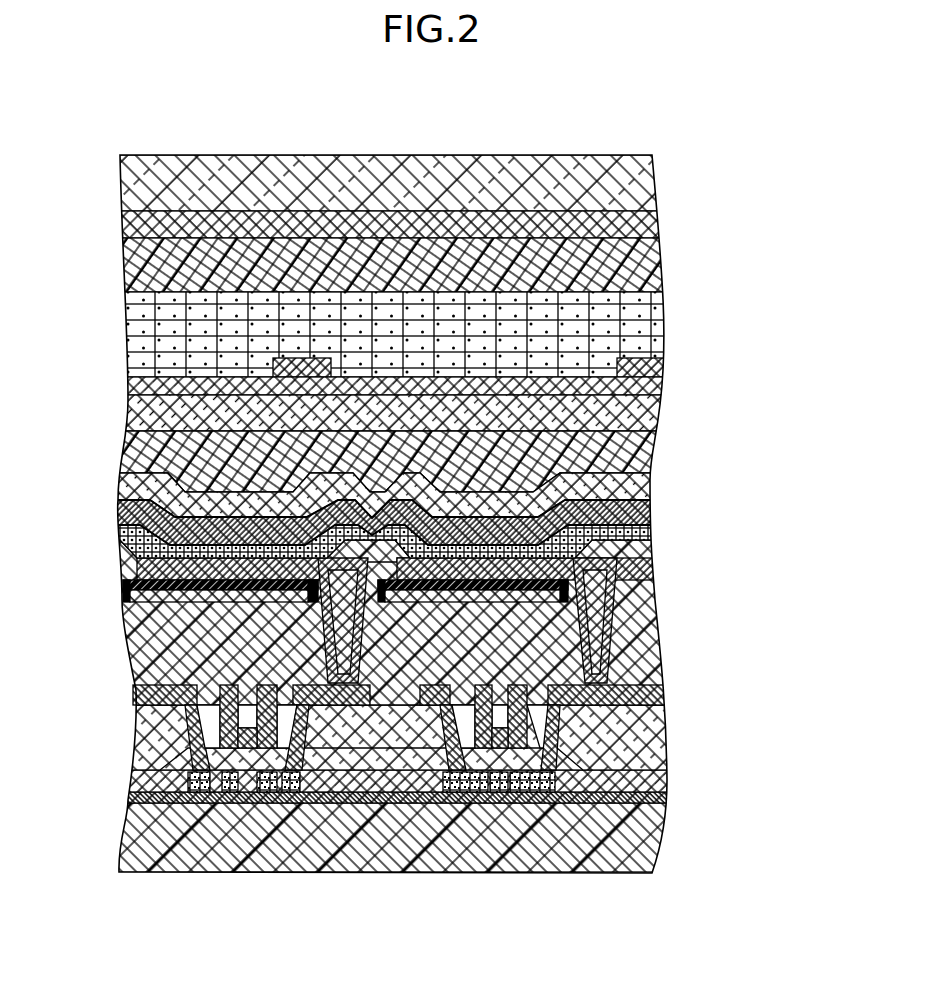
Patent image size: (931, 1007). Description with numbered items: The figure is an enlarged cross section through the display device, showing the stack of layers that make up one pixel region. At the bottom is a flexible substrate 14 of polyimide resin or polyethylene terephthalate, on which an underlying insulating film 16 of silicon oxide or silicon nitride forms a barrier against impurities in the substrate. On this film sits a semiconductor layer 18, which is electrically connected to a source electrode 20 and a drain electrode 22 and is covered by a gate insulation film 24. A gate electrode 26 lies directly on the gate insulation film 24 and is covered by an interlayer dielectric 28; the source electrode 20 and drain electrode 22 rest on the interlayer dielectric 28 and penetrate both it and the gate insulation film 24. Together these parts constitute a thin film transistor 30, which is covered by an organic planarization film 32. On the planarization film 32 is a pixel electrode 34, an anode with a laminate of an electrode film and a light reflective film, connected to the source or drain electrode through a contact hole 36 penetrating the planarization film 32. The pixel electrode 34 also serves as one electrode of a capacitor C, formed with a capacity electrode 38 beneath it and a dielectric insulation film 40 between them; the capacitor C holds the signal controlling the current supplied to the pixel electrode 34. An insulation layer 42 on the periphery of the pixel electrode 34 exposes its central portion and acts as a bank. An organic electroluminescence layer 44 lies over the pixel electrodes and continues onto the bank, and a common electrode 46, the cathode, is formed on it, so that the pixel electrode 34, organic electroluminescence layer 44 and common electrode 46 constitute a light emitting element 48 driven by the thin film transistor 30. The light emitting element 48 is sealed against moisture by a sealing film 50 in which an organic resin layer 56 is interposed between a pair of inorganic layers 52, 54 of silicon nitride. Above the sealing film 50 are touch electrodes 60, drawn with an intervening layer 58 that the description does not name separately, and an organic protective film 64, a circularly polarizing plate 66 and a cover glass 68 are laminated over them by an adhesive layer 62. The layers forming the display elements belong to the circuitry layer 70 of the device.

The substrate 14 is at (642, 837).
The underlying insulating film 16 is at (650, 798).
The semiconductor layer 18 is at (268, 784).
The source electrode 20 is at (207, 762).
The drain electrode 22 is at (284, 762).
The gate insulation film 24 is at (650, 782).
The gate electrode 26 is at (244, 740).
The interlayer dielectric 28 is at (648, 735).
The thin film transistor 30 is at (405, 809).
The planarization film 32 is at (650, 658).
The pixel electrode 34 is at (439, 619).
The contact hole 36 is at (356, 628).
The capacity electrode 38 is at (487, 584).
The dielectric insulation film 40 is at (445, 598).
The insulation layer 42 is at (358, 562).
The organic electroluminescence layer 44 is at (637, 530).
The common electrode 46 is at (635, 512).
The light emitting element 48 is at (450, 591).
The sealing film 50 is at (450, 456).
The inorganic layer 52 is at (422, 489).
The inorganic layer 54 is at (643, 418).
The organic layer 56 is at (637, 453).
The adhesive layer 58 is at (648, 392).
The touch electrode 60 is at (648, 370).
The adhesive layer 62 is at (645, 334).
The organic protective film 64 is at (643, 258).
The circularly polarizing plate 66 is at (647, 223).
The cover glass 68 is at (642, 187).
The circuitry layer 70 is at (418, 699).
The capacitor C is at (345, 631).